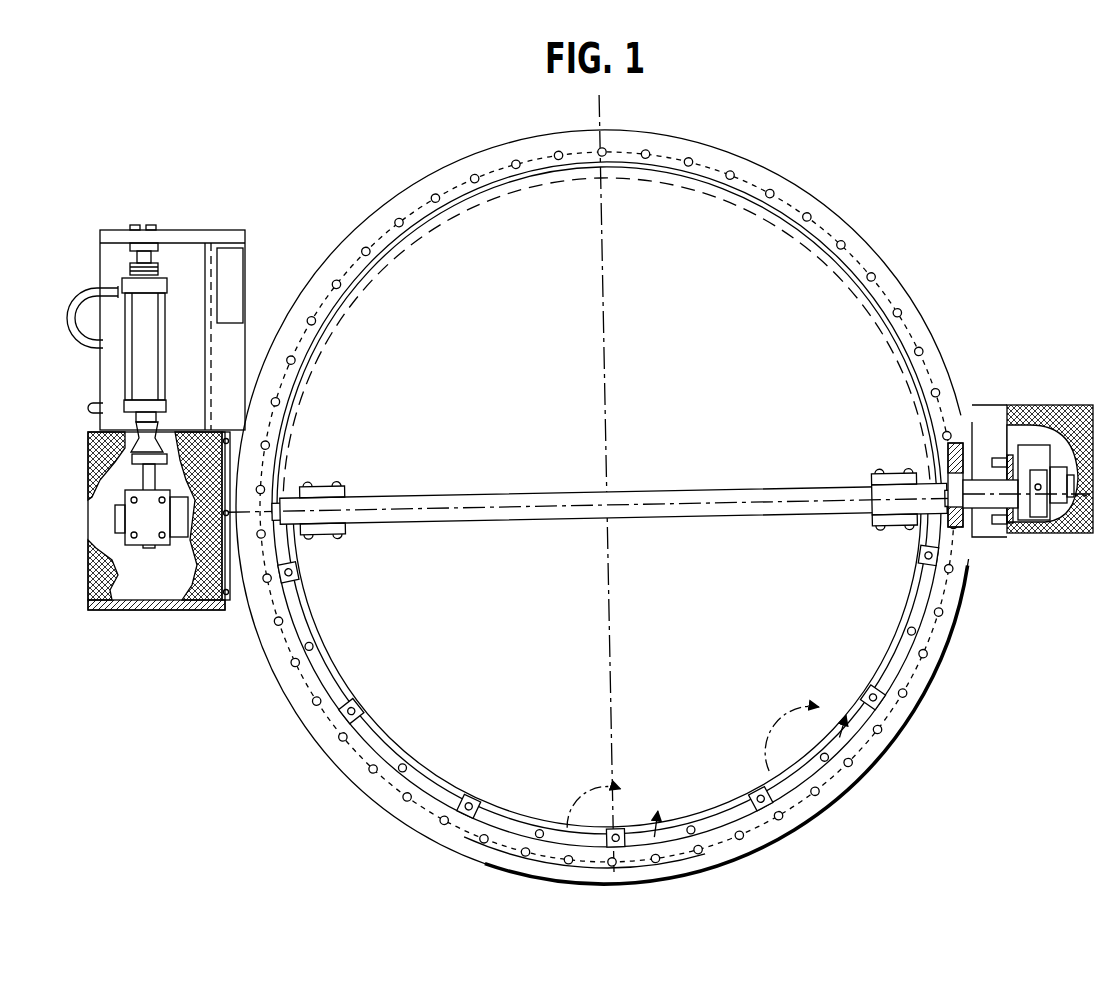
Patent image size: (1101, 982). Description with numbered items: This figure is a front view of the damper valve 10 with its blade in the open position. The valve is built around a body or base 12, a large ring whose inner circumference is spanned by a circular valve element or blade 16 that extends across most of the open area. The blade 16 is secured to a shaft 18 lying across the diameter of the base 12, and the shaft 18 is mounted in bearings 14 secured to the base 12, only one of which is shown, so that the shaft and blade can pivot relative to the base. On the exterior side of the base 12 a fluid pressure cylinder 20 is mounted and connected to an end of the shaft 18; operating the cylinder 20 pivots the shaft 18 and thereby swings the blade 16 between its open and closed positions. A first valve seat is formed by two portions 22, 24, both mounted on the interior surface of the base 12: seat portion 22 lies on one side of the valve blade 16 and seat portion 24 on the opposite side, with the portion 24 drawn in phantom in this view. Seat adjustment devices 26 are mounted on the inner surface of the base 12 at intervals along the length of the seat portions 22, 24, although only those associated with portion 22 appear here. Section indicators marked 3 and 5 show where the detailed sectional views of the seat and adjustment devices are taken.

The damper valve 10 is at (374, 162).
The body or base 12 is at (882, 264).
The bearings 14 is at (1047, 530).
The valve element or blade 16 is at (688, 500).
The shaft 18 is at (975, 497).
The fluid pressure cylinder 20 is at (142, 346).
The valve seat portion 22 is at (367, 738).
The valve seat portion 24 is at (522, 190).
The seat adjustment devices 26 is at (932, 553).
The section indicator FIG. 3 is at (612, 812).
The section indicator FIG. 5 is at (805, 731).